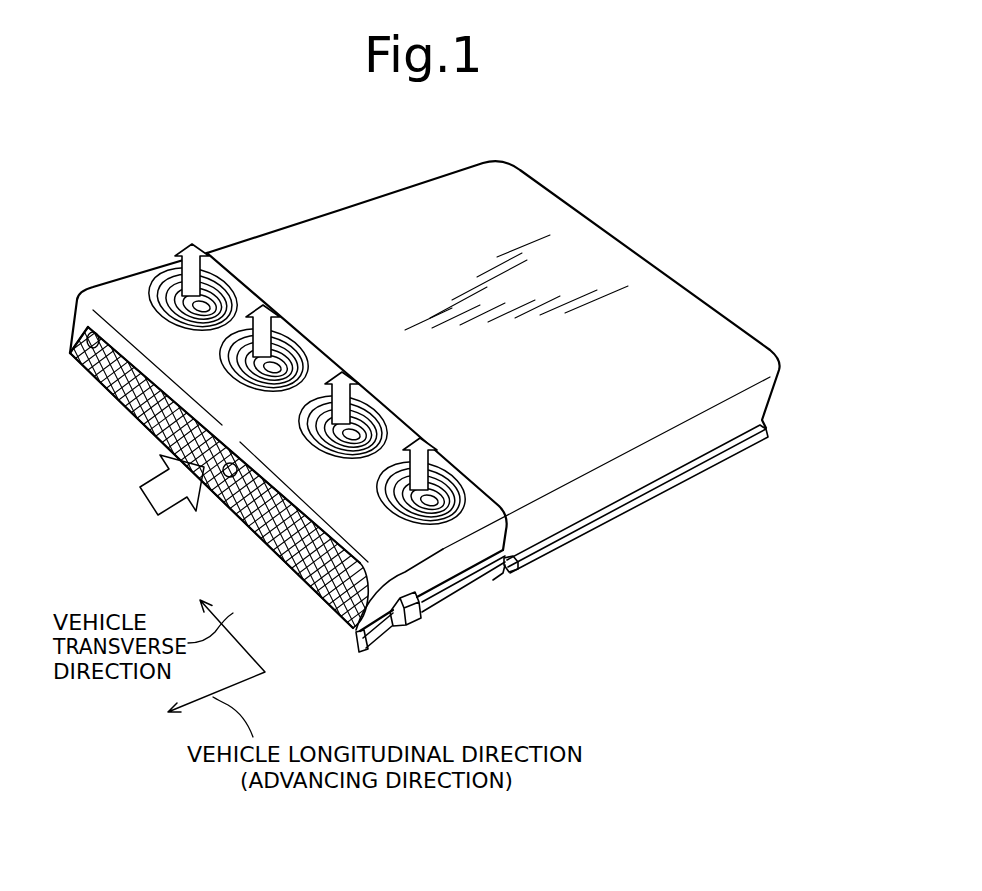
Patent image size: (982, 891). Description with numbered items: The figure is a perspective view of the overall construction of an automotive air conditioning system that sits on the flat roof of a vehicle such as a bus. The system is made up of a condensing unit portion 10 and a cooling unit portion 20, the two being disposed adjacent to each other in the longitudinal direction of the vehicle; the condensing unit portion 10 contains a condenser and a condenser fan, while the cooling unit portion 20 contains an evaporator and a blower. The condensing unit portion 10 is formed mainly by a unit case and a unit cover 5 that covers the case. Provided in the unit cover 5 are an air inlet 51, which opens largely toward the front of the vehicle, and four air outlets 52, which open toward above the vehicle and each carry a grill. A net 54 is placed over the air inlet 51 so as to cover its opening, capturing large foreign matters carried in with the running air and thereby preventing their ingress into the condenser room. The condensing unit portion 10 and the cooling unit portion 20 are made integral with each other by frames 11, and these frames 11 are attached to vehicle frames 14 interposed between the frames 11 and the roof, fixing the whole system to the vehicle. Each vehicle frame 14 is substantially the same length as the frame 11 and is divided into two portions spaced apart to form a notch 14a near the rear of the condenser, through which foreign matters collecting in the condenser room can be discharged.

The condensing unit portion 10 is at (205, 246).
The cooling unit portion 20 is at (492, 151).
The unit cover 5 is at (262, 515).
The frame 11 is at (229, 505).
The air inlet 51 is at (128, 413).
The air outlet 52 is at (300, 430).
The net 54 is at (308, 590).
The vehicle frame 14 is at (458, 598).
The notch 14a is at (500, 577).